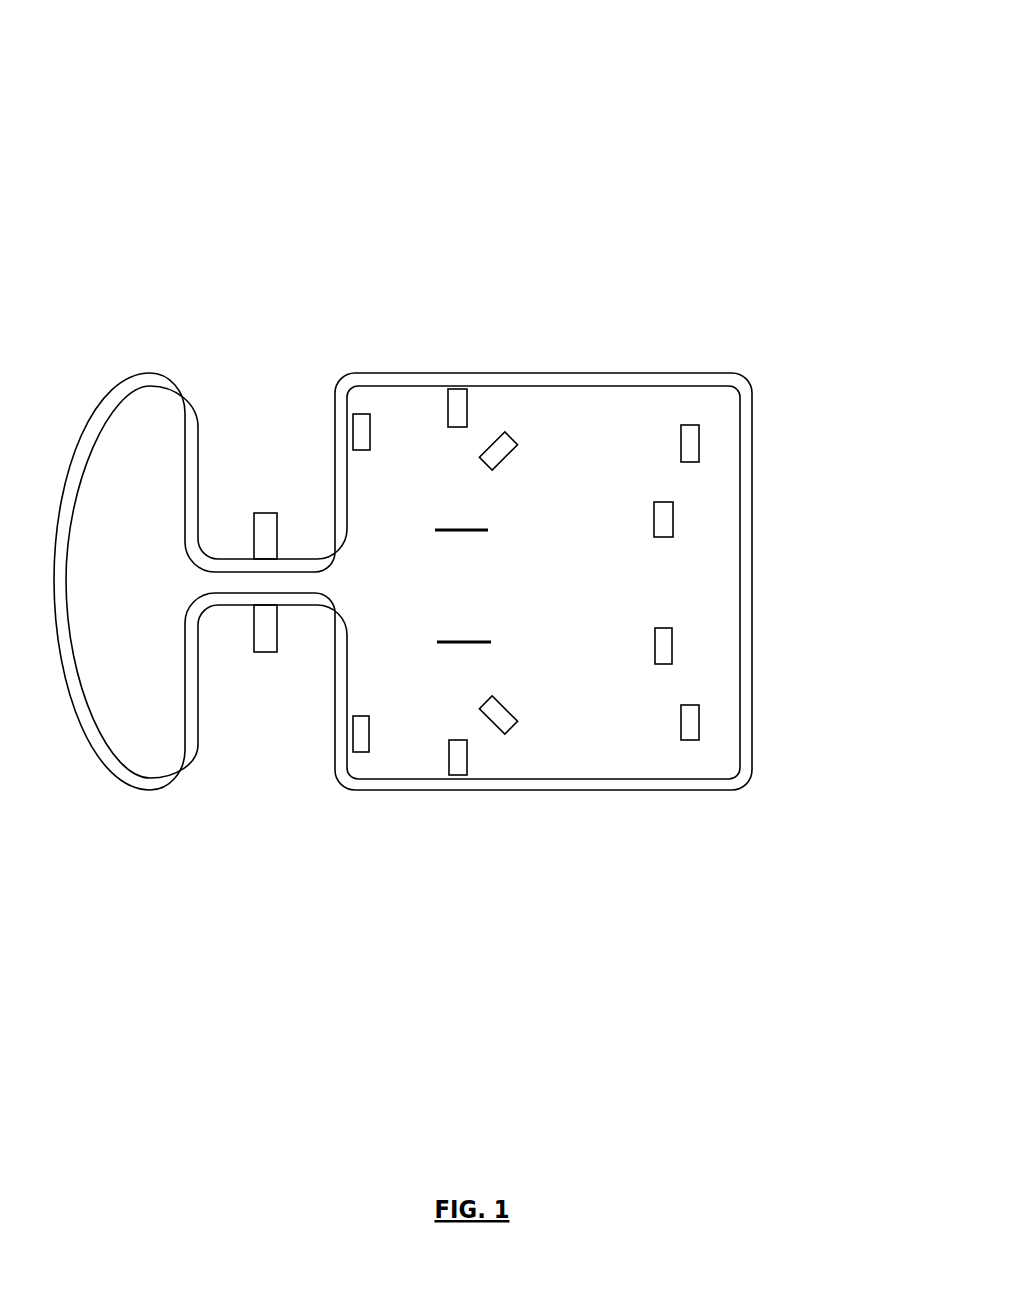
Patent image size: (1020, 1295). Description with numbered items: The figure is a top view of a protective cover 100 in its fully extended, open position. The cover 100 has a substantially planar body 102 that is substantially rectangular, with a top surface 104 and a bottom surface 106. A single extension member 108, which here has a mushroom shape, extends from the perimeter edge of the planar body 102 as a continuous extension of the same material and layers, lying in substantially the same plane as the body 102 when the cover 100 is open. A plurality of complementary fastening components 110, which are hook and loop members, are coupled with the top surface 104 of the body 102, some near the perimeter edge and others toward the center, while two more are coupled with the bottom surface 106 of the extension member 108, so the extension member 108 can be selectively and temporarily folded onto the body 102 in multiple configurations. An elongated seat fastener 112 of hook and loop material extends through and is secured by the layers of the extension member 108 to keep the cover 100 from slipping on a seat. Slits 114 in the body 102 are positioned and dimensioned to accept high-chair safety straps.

The protective cover 100 is at (275, 143).
The substantially planar body 102 is at (605, 407).
The top surface 104 is at (698, 592).
The bottom surface 106 is at (752, 533).
The extension member 108 is at (150, 705).
The fastening components 110 is at (526, 681).
The seat fastener 112 is at (267, 528).
The slits 114 is at (595, 699).